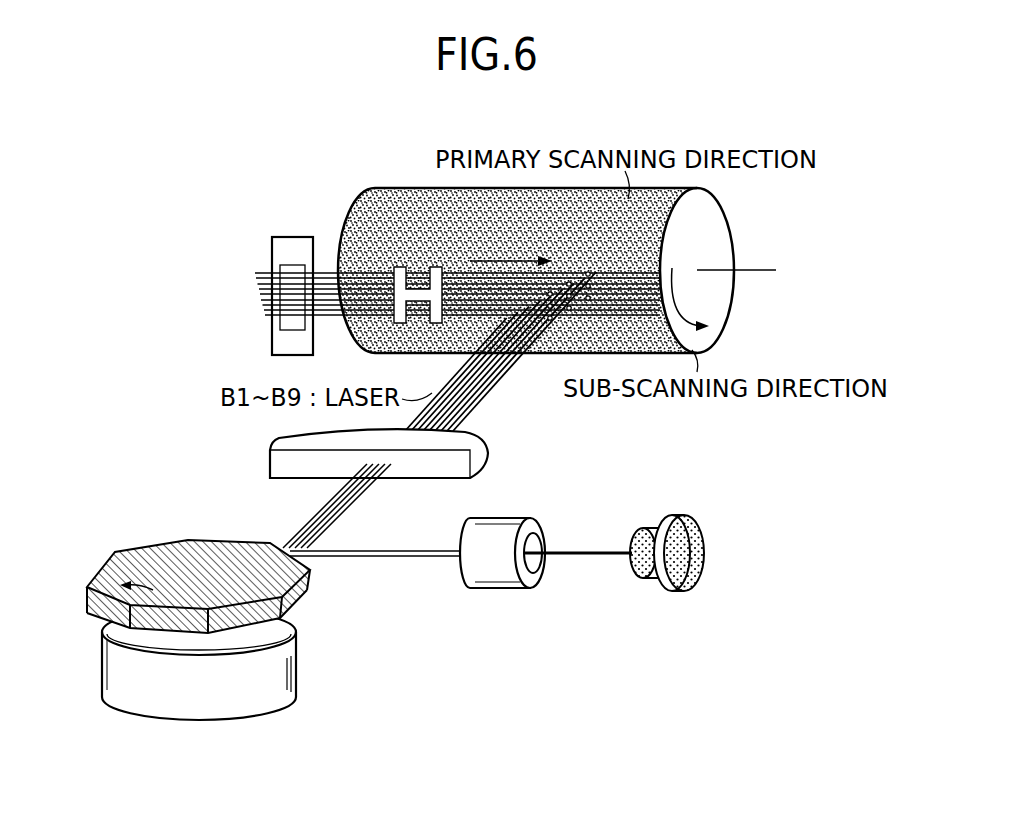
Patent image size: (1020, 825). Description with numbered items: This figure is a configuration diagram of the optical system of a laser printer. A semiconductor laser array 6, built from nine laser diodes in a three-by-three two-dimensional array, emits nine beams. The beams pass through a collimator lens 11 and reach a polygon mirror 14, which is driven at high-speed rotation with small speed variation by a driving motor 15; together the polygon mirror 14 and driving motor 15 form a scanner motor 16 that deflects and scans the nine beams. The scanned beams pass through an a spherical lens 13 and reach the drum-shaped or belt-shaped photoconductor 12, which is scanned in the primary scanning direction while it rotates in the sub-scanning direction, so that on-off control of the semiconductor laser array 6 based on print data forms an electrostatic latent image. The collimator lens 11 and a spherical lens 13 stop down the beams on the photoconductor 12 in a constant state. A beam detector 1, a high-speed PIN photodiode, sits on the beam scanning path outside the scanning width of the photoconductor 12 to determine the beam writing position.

The beam detector 1 is at (292, 236).
The semiconductor laser array 6 is at (650, 583).
The collimator lens 11 is at (500, 590).
The photoconductor 12 is at (377, 188).
The a spherical lens 13 is at (268, 463).
The polygon mirror 14 is at (132, 548).
The driving motor 15 is at (102, 658).
The scanner motor 16 is at (244, 719).